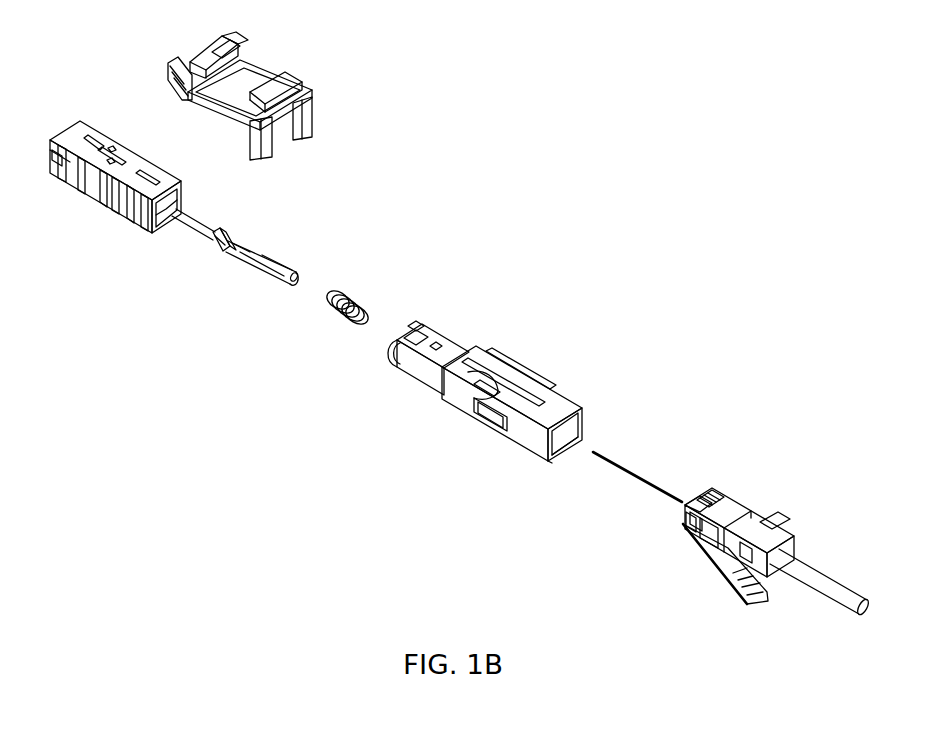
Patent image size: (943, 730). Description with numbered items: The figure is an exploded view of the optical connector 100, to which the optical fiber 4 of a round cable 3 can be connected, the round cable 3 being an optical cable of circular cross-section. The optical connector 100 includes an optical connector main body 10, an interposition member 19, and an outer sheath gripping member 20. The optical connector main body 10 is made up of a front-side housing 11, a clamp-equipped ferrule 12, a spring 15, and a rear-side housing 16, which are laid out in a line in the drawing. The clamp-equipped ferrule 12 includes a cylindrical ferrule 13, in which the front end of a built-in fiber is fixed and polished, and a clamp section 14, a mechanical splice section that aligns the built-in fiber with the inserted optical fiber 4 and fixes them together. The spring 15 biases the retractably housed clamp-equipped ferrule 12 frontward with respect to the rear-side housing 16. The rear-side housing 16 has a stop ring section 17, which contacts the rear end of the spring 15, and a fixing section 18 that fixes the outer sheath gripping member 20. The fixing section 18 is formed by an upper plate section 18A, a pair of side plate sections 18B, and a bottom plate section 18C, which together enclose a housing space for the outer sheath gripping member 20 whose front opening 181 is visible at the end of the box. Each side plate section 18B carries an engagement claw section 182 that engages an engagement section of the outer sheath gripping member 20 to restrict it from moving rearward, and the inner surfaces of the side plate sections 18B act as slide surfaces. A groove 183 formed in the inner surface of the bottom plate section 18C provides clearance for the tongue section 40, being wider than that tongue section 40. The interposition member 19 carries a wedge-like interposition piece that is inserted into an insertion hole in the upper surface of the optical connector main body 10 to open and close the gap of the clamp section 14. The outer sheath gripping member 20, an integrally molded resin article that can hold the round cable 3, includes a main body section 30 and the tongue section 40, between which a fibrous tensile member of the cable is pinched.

The optical connector 100 is at (688, 62).
The optical connector main body 10 is at (365, 332).
The front-side housing 11 is at (78, 196).
The clamp-equipped ferrule 12 is at (283, 352).
The ferrule 13 is at (180, 230).
The clamp section 14 is at (258, 270).
The spring 15 is at (350, 292).
The rear-side housing 16 is at (372, 392).
The stop ring section 17 is at (392, 352).
The fixing section 18 is at (510, 437).
The front opening 181 is at (583, 413).
The engagement claw section 182 is at (477, 396).
The groove 183 is at (565, 460).
The upper plate section 18A is at (550, 404).
The side plate section 18B is at (588, 428).
The bottom plate section 18C is at (555, 462).
The interposition member 19 is at (277, 60).
The outer sheath gripping member 20 is at (745, 508).
The main body section 30 is at (690, 528).
The tongue section 40 is at (732, 582).
The round cable 3 is at (813, 565).
The optical fiber 4 is at (635, 468).